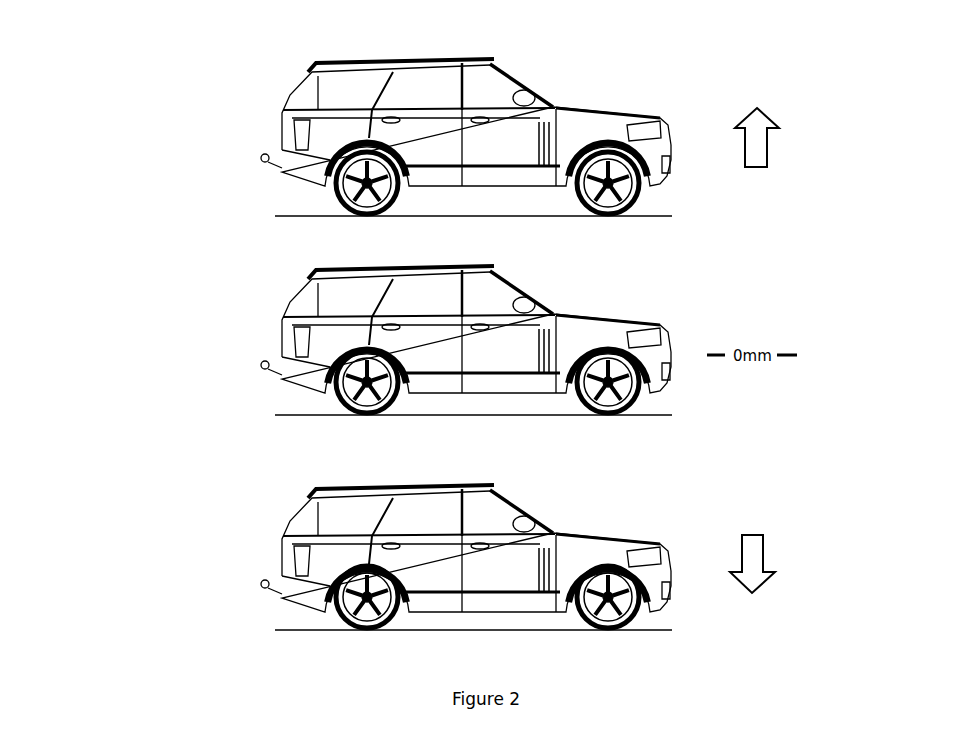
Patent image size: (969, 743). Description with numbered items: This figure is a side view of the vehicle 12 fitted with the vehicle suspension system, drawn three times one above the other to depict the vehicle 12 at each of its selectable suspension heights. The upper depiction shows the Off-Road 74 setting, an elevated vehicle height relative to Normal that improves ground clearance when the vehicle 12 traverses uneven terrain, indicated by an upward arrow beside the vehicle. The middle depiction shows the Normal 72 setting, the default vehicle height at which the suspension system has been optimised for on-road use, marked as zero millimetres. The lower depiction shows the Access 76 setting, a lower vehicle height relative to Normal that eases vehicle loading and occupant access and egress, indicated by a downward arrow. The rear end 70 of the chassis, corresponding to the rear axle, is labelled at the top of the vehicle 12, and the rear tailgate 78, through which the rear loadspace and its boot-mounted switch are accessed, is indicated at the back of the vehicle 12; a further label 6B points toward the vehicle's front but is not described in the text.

The vehicle 12 is at (148, 52).
The rear end 70 is at (333, 51).
The bonnet 6B is at (601, 88).
The Off-Road 74 is at (714, 45).
The Normal 72 is at (759, 280).
The Access 76 is at (729, 492).
The rear tailgate 78 is at (303, 298).